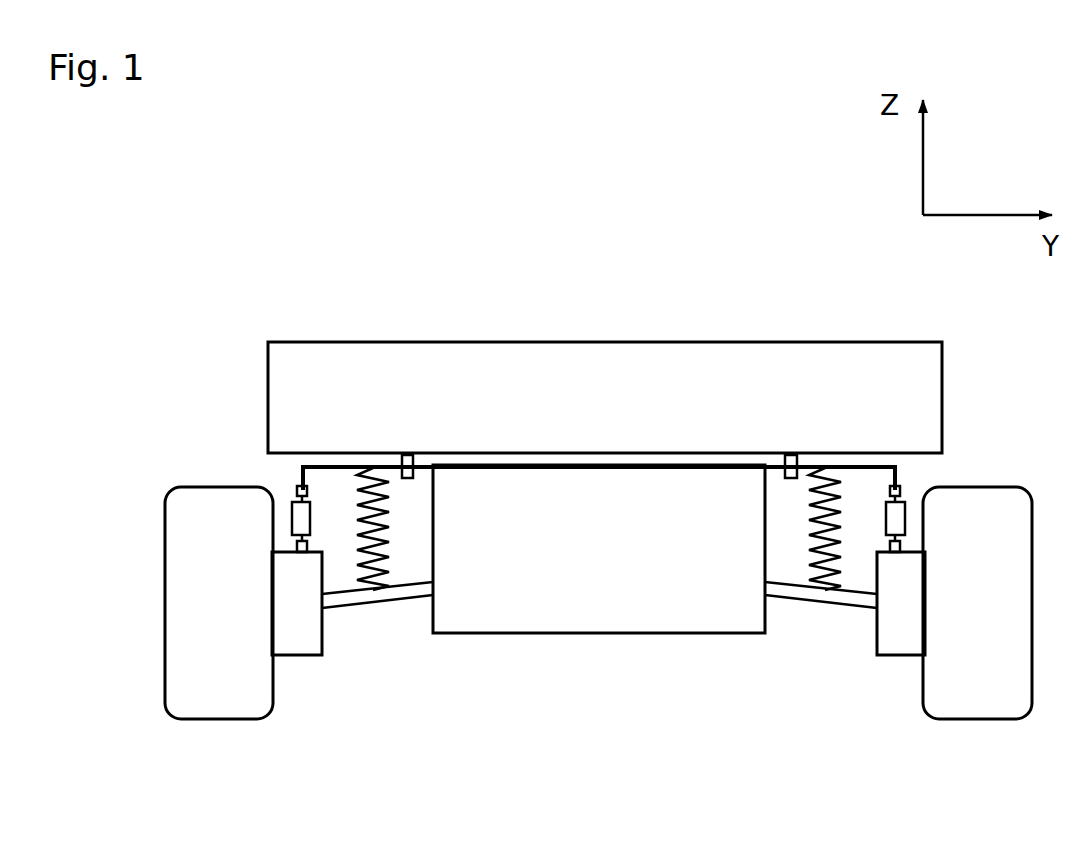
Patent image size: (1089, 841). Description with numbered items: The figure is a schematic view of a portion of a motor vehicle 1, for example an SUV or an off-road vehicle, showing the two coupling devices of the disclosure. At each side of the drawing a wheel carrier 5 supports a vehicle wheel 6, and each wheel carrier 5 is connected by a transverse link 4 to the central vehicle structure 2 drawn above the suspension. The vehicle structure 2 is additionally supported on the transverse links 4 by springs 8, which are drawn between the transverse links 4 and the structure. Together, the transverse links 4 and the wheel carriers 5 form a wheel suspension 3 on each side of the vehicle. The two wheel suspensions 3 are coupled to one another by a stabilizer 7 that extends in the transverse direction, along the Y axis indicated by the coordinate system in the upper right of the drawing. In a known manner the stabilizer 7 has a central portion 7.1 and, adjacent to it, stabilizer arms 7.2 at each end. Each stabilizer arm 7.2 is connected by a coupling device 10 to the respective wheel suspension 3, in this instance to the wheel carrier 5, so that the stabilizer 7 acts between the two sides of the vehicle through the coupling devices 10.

The motor vehicle 1 is at (668, 260).
The vehicle structure 2 is at (599, 417).
The wheel suspension 3 is at (598, 674).
The transverse link 4 is at (387, 605).
The wheel carrier 5 is at (304, 618).
The vehicle wheel 6 is at (226, 620).
The stabilizer 7 is at (528, 470).
The central portion 7.1 is at (468, 453).
The stabilizer arm 7.2 is at (296, 480).
The spring 8 is at (397, 529).
The coupling device 10 is at (318, 505).